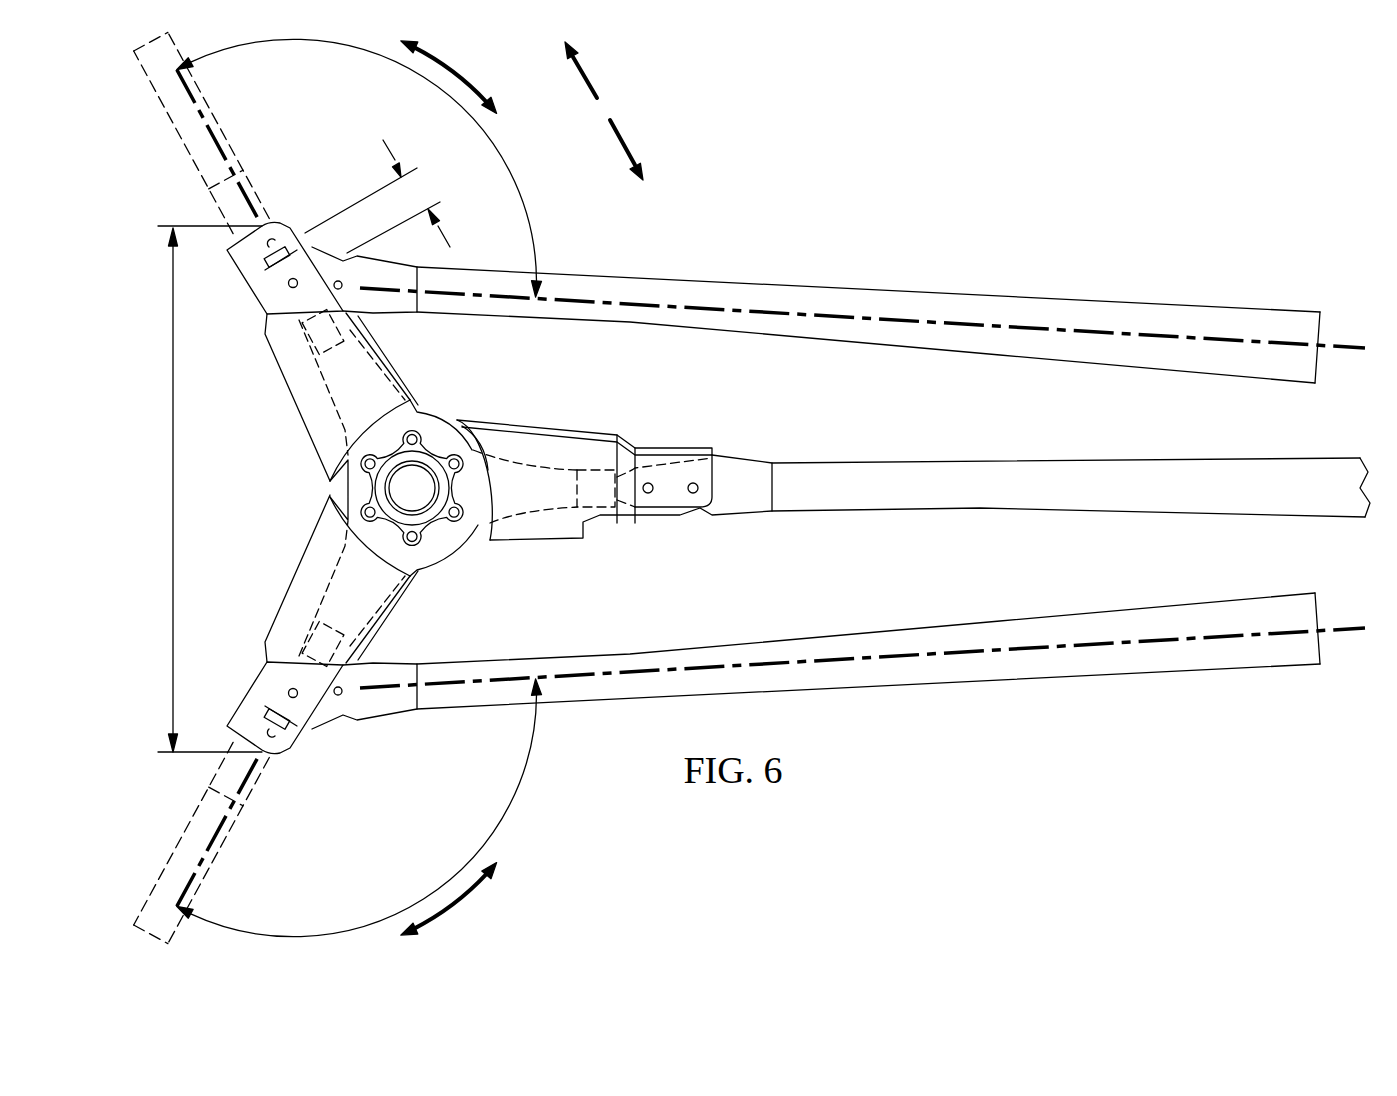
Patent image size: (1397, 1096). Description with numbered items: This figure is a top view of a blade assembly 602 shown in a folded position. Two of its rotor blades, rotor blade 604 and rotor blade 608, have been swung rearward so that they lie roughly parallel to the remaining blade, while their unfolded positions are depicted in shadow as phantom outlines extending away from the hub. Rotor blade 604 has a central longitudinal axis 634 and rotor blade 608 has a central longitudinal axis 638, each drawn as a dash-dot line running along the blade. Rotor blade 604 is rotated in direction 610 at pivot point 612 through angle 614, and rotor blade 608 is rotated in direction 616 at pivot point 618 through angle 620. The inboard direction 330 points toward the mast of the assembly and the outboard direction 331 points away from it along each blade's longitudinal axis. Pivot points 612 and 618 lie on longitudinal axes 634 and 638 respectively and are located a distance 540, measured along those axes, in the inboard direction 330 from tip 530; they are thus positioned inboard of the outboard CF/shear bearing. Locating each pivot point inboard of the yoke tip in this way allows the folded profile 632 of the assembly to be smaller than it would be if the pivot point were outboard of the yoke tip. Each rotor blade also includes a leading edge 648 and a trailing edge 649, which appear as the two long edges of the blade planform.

The blade assembly 602 is at (988, 160).
The rotor blade 604 is at (708, 218).
The rotor blade 608 is at (174, 846).
The pivot point 612 is at (288, 284).
The pivot point 618 is at (288, 693).
The angle 614 is at (507, 160).
The angle 620 is at (505, 818).
The direction 610 is at (450, 66).
The direction 616 is at (452, 912).
The inboard direction 330 is at (624, 142).
The outboard direction 331 is at (592, 80).
The tip 530 is at (283, 218).
The distance 540 is at (450, 233).
The folded profile 632 is at (166, 492).
The central longitudinal axis 634 is at (1350, 346).
The central longitudinal axis 638 is at (1350, 630).
The leading edge 648 is at (889, 290).
The trailing edge 649 is at (926, 350).